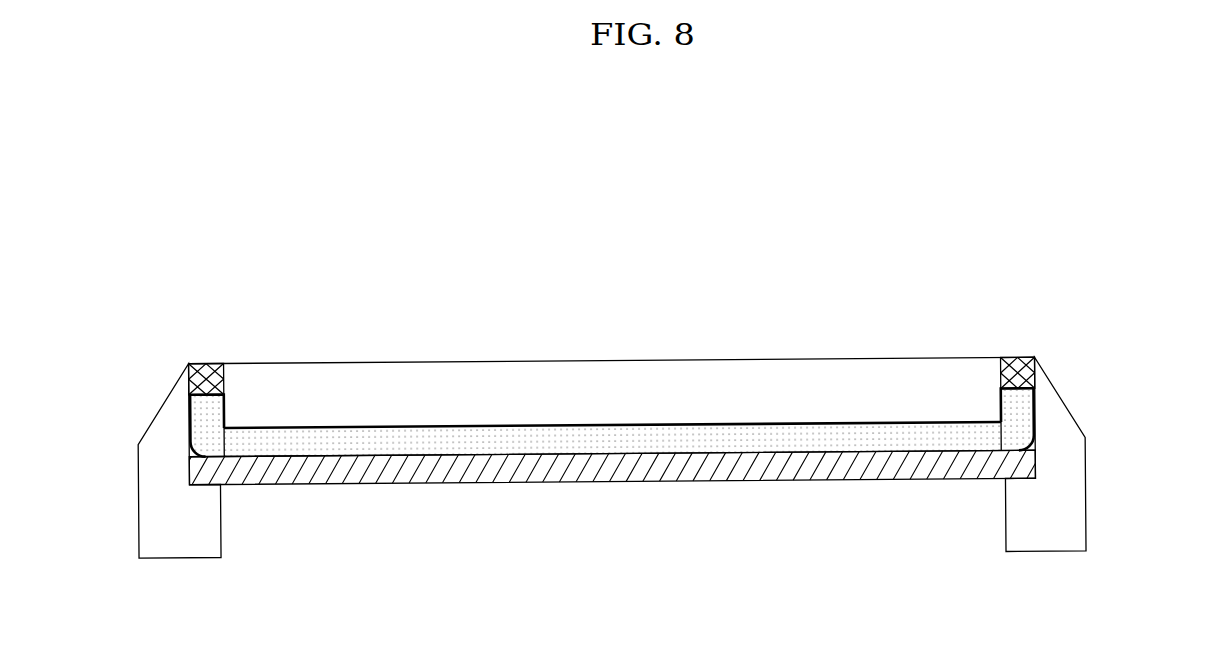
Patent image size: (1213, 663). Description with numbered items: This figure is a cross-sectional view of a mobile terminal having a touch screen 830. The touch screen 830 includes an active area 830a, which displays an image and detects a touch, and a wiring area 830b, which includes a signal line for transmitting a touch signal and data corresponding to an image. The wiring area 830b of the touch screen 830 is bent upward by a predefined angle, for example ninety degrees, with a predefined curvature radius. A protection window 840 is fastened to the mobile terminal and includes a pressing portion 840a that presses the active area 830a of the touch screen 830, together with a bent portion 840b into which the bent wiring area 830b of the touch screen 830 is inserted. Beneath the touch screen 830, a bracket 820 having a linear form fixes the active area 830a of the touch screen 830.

The bracket 820 is at (1023, 463).
The touch screen 830 is at (1145, 345).
The active area 830a is at (983, 428).
The wiring area 830b is at (1023, 417).
The protection window 840 is at (325, 300).
The pressing portion 840a is at (302, 378).
The bent portion 840b is at (208, 362).